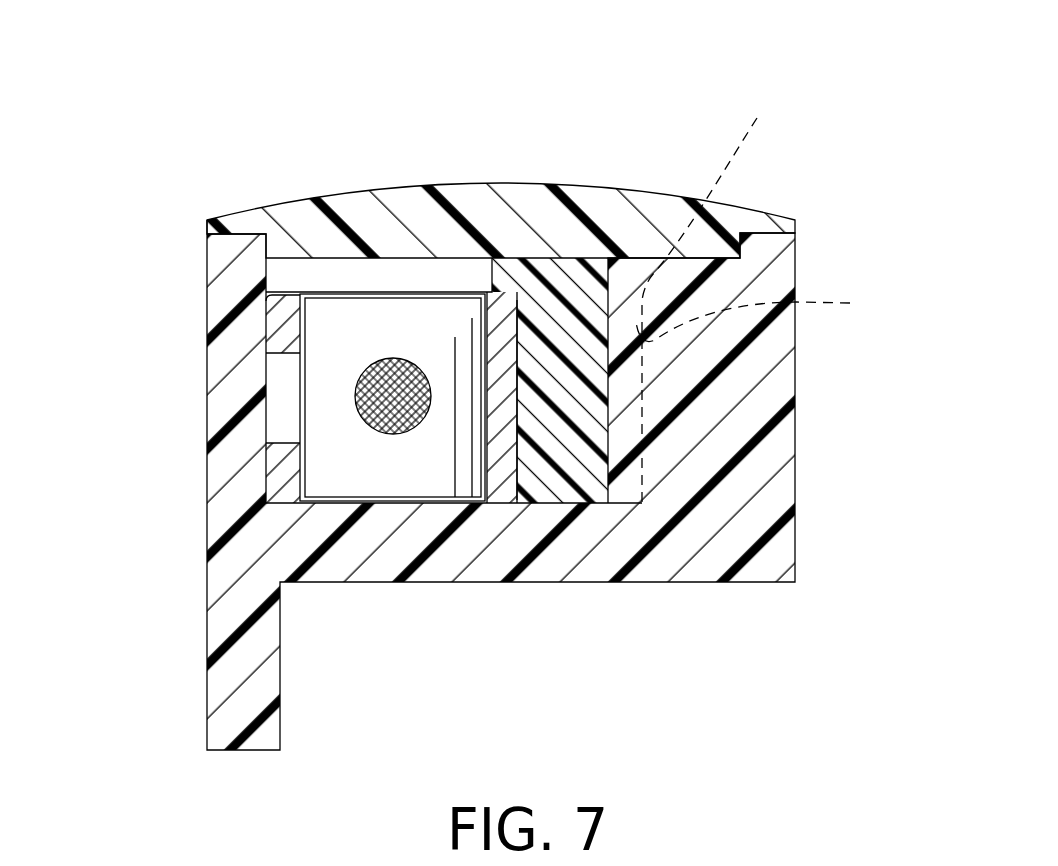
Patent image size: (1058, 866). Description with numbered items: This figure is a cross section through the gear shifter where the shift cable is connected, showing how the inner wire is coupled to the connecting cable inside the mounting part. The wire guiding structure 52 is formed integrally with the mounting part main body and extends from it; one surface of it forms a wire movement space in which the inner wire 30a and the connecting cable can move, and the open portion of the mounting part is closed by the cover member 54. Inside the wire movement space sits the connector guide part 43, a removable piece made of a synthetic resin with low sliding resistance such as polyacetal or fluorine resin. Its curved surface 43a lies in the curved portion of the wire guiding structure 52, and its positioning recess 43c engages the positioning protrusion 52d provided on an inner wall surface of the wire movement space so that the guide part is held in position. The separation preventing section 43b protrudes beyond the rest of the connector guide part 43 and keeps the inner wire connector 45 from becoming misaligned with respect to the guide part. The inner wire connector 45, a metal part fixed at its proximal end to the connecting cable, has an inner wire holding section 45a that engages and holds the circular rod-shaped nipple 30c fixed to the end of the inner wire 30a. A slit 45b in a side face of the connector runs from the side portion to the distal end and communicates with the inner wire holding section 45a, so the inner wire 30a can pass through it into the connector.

The inner wire 30a is at (417, 432).
The nipple 30c is at (377, 483).
The connector guide part 43 is at (563, 264).
The curved surface 43a is at (509, 413).
The separation preventing section 43b is at (503, 256).
The positioning recess 43c is at (723, 286).
The inner wire connector 45 is at (278, 328).
The inner wire holding section 45a is at (470, 333).
The slit 45b is at (282, 440).
The wire guiding structure 52 is at (196, 415).
The positioning protrusion 52d is at (783, 314).
The cover member 54 is at (642, 190).